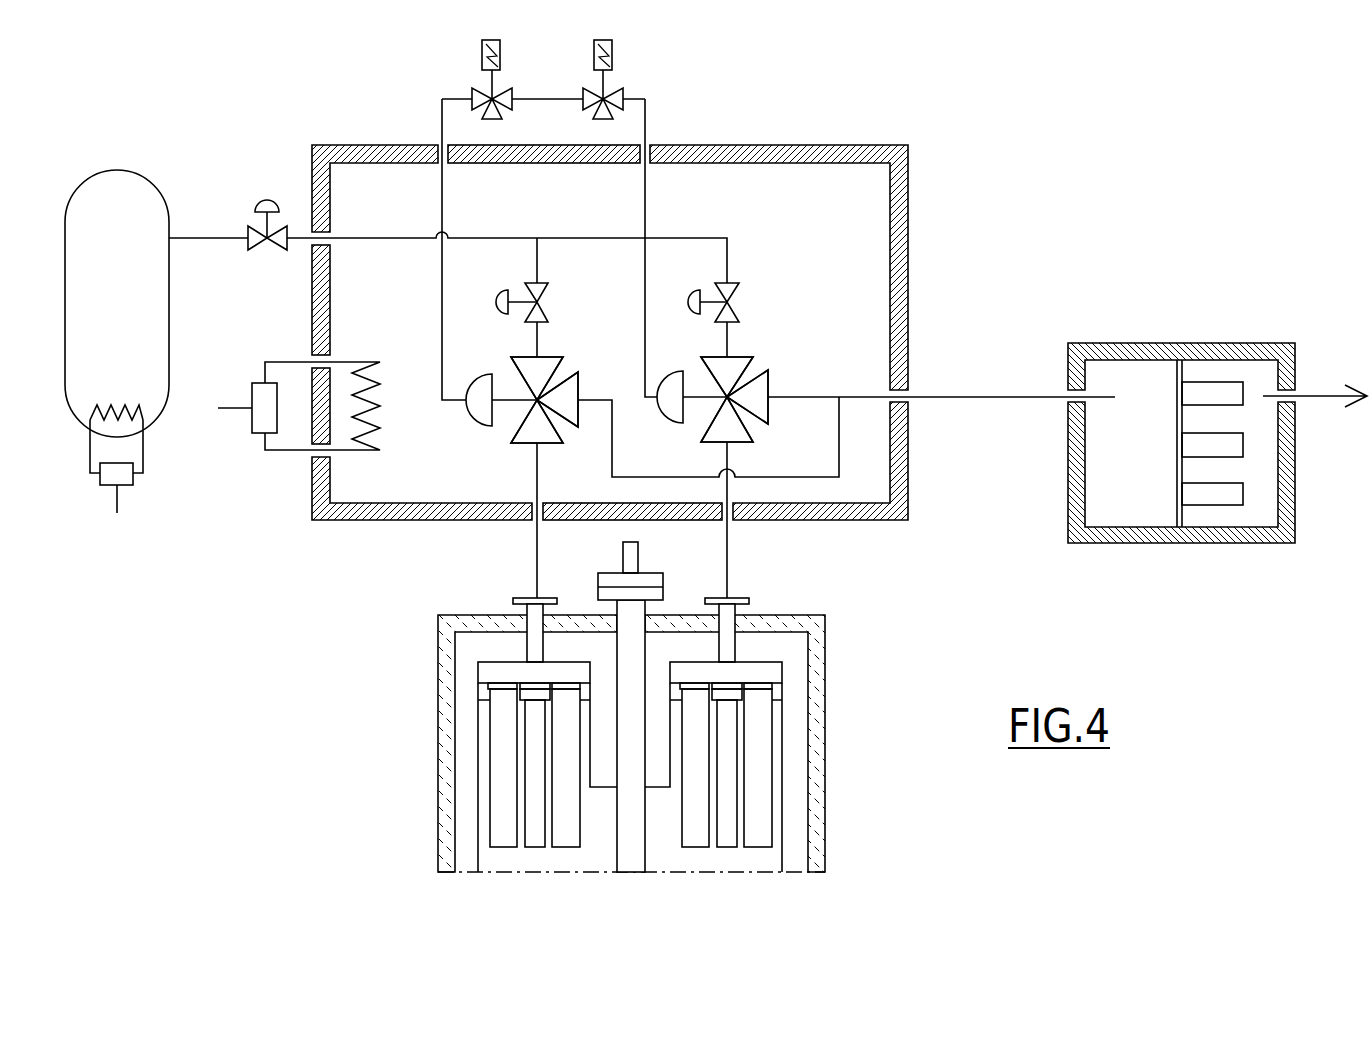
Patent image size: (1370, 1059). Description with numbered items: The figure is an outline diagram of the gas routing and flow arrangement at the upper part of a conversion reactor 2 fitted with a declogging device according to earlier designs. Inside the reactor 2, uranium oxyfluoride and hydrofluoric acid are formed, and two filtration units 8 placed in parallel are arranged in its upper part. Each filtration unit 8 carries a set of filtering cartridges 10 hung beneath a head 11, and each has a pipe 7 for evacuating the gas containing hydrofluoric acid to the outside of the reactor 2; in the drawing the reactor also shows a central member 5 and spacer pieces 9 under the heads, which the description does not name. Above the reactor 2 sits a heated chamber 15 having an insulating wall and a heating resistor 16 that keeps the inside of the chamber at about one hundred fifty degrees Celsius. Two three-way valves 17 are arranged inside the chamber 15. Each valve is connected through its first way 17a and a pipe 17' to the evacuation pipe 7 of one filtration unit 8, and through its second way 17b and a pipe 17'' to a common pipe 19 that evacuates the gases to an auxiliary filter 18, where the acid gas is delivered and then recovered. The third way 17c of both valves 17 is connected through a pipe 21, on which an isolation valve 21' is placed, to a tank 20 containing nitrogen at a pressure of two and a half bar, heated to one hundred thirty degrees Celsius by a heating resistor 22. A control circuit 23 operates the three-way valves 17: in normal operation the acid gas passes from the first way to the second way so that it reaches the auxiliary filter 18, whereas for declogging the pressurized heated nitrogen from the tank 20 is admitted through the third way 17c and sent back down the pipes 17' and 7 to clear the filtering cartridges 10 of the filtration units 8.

The reactor 2 is at (615, 733).
The central support rod 5 is at (634, 647).
The pipe 7 is at (532, 645).
The filtration unit 8 is at (465, 668).
The spacer 9 is at (588, 695).
The filtering cartridge 10 is at (503, 840).
The head 11 is at (525, 673).
The heated chamber 15 is at (703, 150).
The heating resistor 16 is at (380, 423).
The three-way valve 17 is at (620, 271).
The first way 17a is at (530, 434).
The second way 17b is at (580, 400).
The third way 17c is at (532, 370).
The pipe 17' is at (559, 520).
The pipe 17'' is at (735, 464).
The auxiliary filter 18 is at (1160, 352).
The pipe 19 is at (1008, 393).
The tank 20 is at (143, 363).
The pipe 21 is at (448, 238).
The shut-off valve 21' is at (261, 257).
The heating resistor 22 is at (125, 432).
The control circuit 23 is at (530, 83).